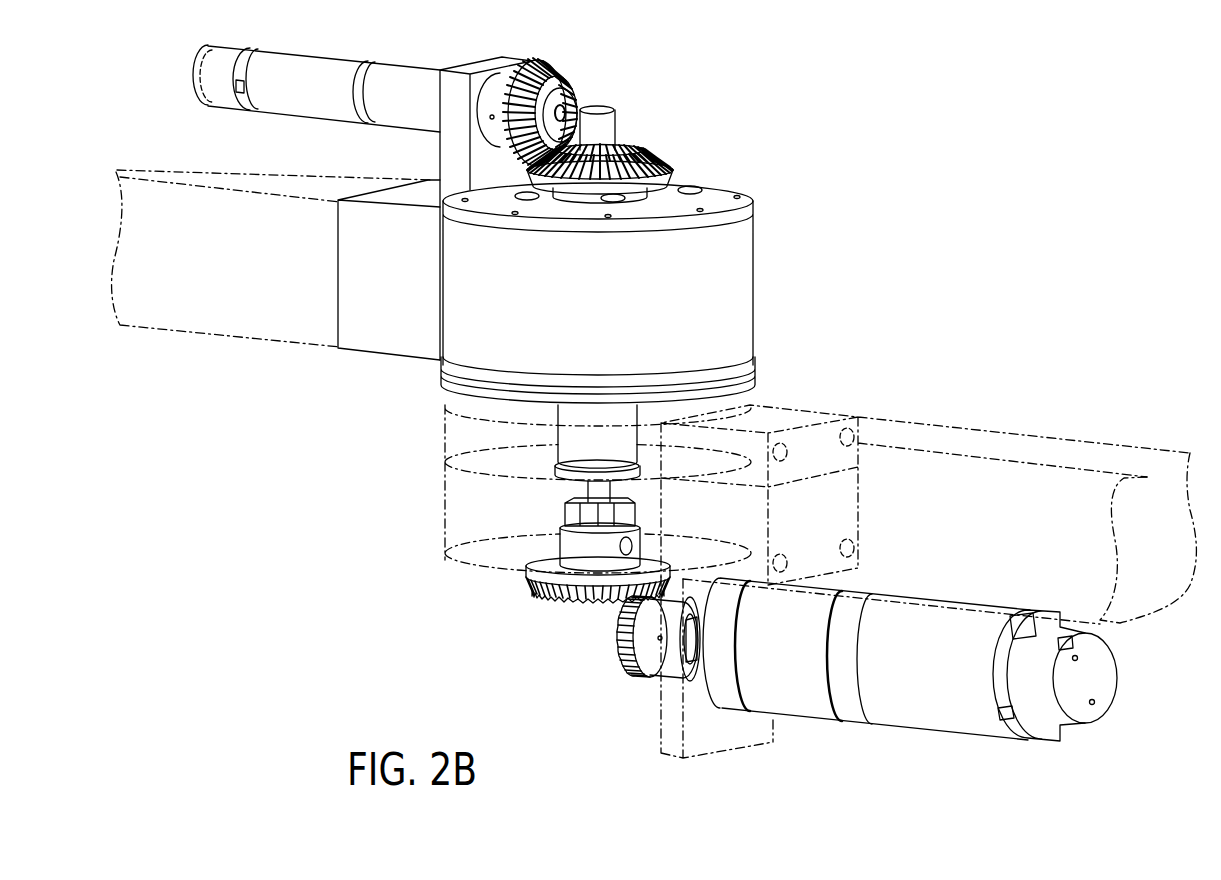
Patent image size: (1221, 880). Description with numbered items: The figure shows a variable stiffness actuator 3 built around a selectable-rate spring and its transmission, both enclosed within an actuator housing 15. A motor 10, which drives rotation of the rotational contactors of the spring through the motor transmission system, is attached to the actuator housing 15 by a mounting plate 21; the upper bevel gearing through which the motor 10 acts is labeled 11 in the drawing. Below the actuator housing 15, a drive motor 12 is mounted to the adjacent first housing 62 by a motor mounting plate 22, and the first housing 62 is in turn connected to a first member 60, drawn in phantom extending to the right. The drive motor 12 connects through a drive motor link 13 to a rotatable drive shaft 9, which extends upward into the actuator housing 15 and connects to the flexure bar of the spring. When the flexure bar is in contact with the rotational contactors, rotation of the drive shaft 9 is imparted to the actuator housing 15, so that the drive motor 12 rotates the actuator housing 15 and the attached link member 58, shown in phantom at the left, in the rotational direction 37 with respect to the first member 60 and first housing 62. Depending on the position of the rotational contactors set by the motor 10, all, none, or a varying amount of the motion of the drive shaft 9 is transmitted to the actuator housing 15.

The variable stiffness actuator 3 is at (614, 55).
The rotatable drive shaft 9 is at (592, 490).
The motor 10 is at (301, 57).
The bevel gear set 11 is at (657, 147).
The drive motor 12 is at (953, 733).
The drive motor link 13 is at (619, 649).
The actuator housing 15 is at (752, 340).
The mounting plate 21 is at (488, 62).
The motor mounting plate 22 is at (717, 728).
The rotational direction 37 is at (107, 247).
The link member 58 is at (264, 178).
The first member 60 is at (1063, 457).
The first housing 62 is at (482, 570).